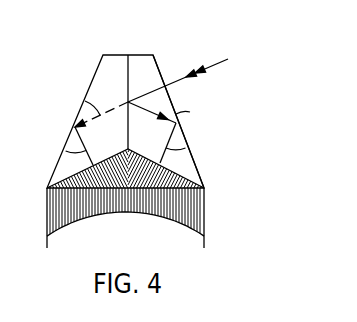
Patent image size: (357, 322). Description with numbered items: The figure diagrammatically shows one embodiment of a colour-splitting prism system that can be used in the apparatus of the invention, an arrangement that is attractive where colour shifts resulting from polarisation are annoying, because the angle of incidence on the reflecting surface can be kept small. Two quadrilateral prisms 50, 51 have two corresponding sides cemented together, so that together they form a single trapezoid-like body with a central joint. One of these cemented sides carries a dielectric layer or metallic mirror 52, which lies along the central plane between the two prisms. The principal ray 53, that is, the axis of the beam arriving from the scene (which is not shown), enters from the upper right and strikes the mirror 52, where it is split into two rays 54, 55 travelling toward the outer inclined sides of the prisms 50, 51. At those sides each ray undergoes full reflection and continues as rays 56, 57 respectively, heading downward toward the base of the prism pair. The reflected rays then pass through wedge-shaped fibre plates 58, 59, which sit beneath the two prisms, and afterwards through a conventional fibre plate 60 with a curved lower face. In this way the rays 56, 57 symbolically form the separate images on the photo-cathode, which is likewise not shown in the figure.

The quadrilateral prism 50 is at (105, 80).
The quadrilateral prism 51 is at (160, 68).
The dielectric layer or metallic mirror 52 is at (128, 68).
The principal ray 53 is at (190, 81).
The ray 54 is at (85, 102).
The ray 55 is at (190, 112).
The ray 56 is at (66, 151).
The ray 57 is at (186, 148).
The wedge-shaped fibre plate 58 is at (70, 183).
The wedge-shaped fibre plate 59 is at (214, 177).
The conventional fibre plate 60 is at (201, 216).